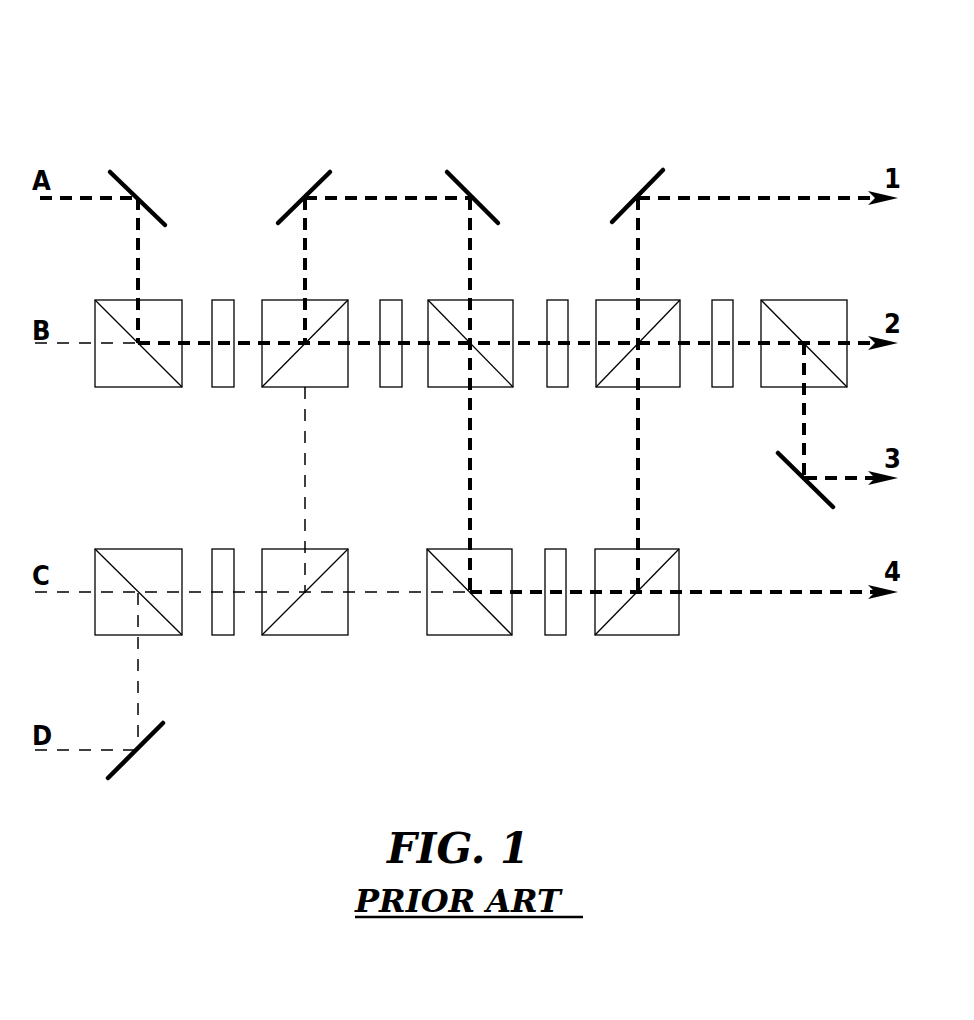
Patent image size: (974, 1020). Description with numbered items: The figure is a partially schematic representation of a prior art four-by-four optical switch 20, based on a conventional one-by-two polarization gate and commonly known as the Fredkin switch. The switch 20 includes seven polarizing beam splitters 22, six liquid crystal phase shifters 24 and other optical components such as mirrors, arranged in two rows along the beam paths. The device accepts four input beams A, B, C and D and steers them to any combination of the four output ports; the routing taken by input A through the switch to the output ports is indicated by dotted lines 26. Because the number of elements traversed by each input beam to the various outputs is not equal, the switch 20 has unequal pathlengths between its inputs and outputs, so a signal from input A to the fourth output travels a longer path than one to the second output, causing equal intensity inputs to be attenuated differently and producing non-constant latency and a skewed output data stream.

The prior art 4×4 switch 20 is at (772, 119).
The polarizing beam splitter 22 is at (281, 311).
The liquid crystal phase shifter 24 is at (221, 378).
The dotted lines 26 is at (135, 253).